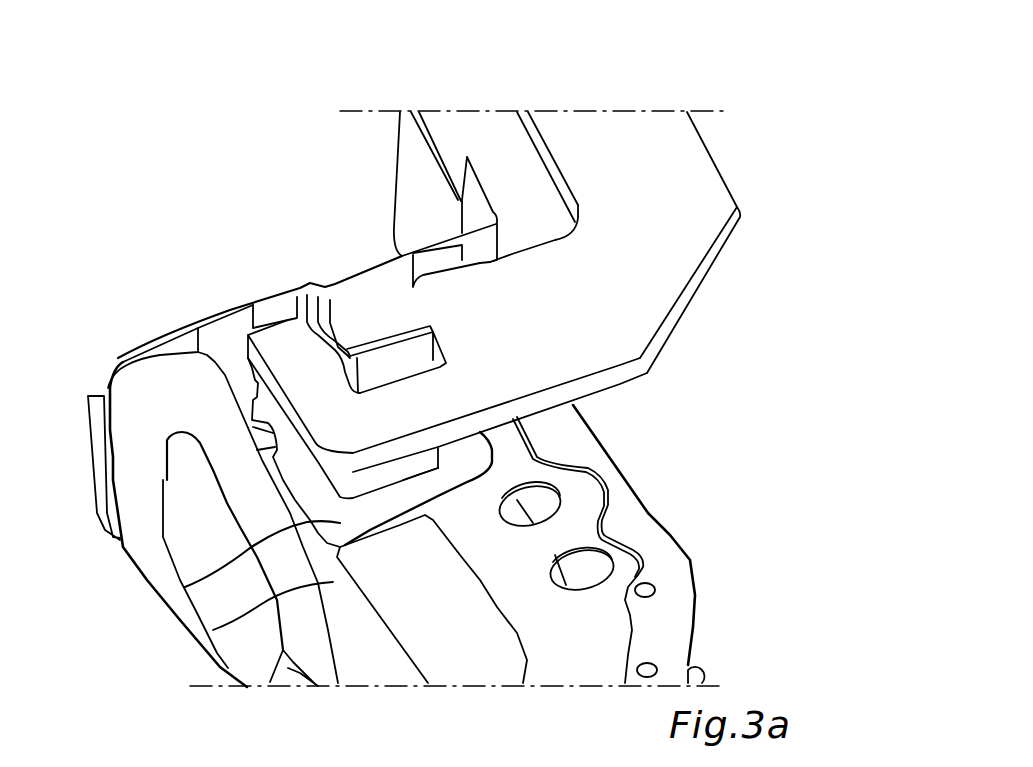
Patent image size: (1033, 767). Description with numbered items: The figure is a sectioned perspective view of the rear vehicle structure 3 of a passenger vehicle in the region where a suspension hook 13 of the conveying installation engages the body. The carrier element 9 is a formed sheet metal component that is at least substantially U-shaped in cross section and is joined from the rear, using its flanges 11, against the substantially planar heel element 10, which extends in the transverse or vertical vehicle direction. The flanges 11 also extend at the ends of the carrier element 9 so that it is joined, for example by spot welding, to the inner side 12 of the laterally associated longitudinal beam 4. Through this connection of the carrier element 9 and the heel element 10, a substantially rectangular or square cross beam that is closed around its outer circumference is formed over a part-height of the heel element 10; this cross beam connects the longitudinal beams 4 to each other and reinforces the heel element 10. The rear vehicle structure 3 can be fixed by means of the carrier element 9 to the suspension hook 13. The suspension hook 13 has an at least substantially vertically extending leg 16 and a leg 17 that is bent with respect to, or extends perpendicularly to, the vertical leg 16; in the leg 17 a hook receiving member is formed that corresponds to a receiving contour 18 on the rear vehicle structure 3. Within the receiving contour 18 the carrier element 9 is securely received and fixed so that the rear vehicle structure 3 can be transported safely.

The rear vehicle structure 3 is at (706, 541).
The longitudinal beam 4 is at (637, 517).
The carrier element 9 is at (397, 353).
The heel element 10 is at (228, 330).
The flange 11 is at (278, 312).
The inner side 12 is at (213, 630).
The suspension hook 13 is at (597, 143).
The vertically extending leg 16 is at (683, 172).
The leg 17 is at (647, 303).
The receiving contour 18 is at (326, 283).